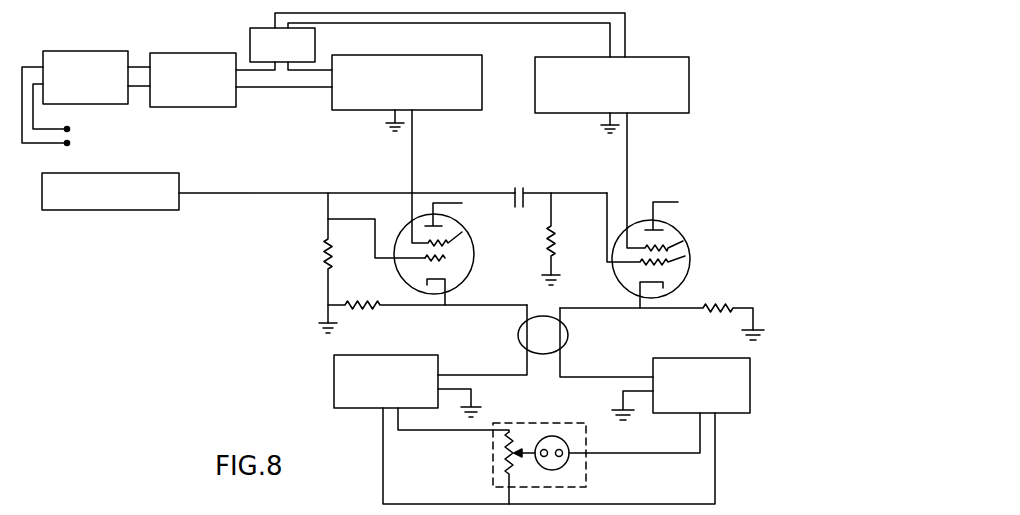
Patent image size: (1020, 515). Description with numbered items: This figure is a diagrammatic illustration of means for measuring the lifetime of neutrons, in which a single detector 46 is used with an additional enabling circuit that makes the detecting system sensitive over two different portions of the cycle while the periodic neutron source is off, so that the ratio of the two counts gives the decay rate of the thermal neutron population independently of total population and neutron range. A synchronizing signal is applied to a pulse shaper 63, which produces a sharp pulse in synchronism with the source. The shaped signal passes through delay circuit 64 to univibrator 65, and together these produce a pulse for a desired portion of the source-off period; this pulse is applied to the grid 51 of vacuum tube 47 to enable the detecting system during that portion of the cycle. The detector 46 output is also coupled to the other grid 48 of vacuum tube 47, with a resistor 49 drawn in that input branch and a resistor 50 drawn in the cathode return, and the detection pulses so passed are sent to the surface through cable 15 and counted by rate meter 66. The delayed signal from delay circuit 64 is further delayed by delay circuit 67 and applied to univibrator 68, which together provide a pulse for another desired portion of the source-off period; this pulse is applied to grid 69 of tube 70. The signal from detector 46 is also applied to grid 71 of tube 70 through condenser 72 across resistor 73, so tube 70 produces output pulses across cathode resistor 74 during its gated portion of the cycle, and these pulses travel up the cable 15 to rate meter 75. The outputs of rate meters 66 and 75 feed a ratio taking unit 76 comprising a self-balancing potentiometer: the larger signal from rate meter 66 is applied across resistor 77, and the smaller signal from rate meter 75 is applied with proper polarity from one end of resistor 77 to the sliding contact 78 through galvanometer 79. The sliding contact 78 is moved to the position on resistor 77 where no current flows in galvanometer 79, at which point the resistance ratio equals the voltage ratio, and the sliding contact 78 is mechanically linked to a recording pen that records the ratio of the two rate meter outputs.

The cable 15 is at (523, 330).
The detector 46 is at (168, 173).
The vacuum tube 47 is at (445, 207).
The control grid 48 is at (447, 258).
The resistor 49 is at (317, 263).
The resistor 50 is at (427, 294).
The grid 51 is at (462, 225).
The pulse shaper 63 is at (95, 51).
The delay circuit 64 is at (182, 53).
The univibrator 65 is at (413, 55).
The rate meter 66 is at (334, 364).
The delay circuit 67 is at (315, 46).
The univibrator 68 is at (650, 57).
The grid 69 is at (684, 241).
The tube 70 is at (662, 210).
The grid 71 is at (686, 256).
The condenser 72 is at (524, 189).
The resistor 73 is at (556, 242).
The cathode resistor 74 is at (720, 318).
The rate meter 75 is at (751, 367).
The ratio taking unit 76 is at (541, 451).
The resistor 77 is at (503, 463).
The sliding contact 78 is at (518, 446).
The galvanometer 79 is at (553, 436).